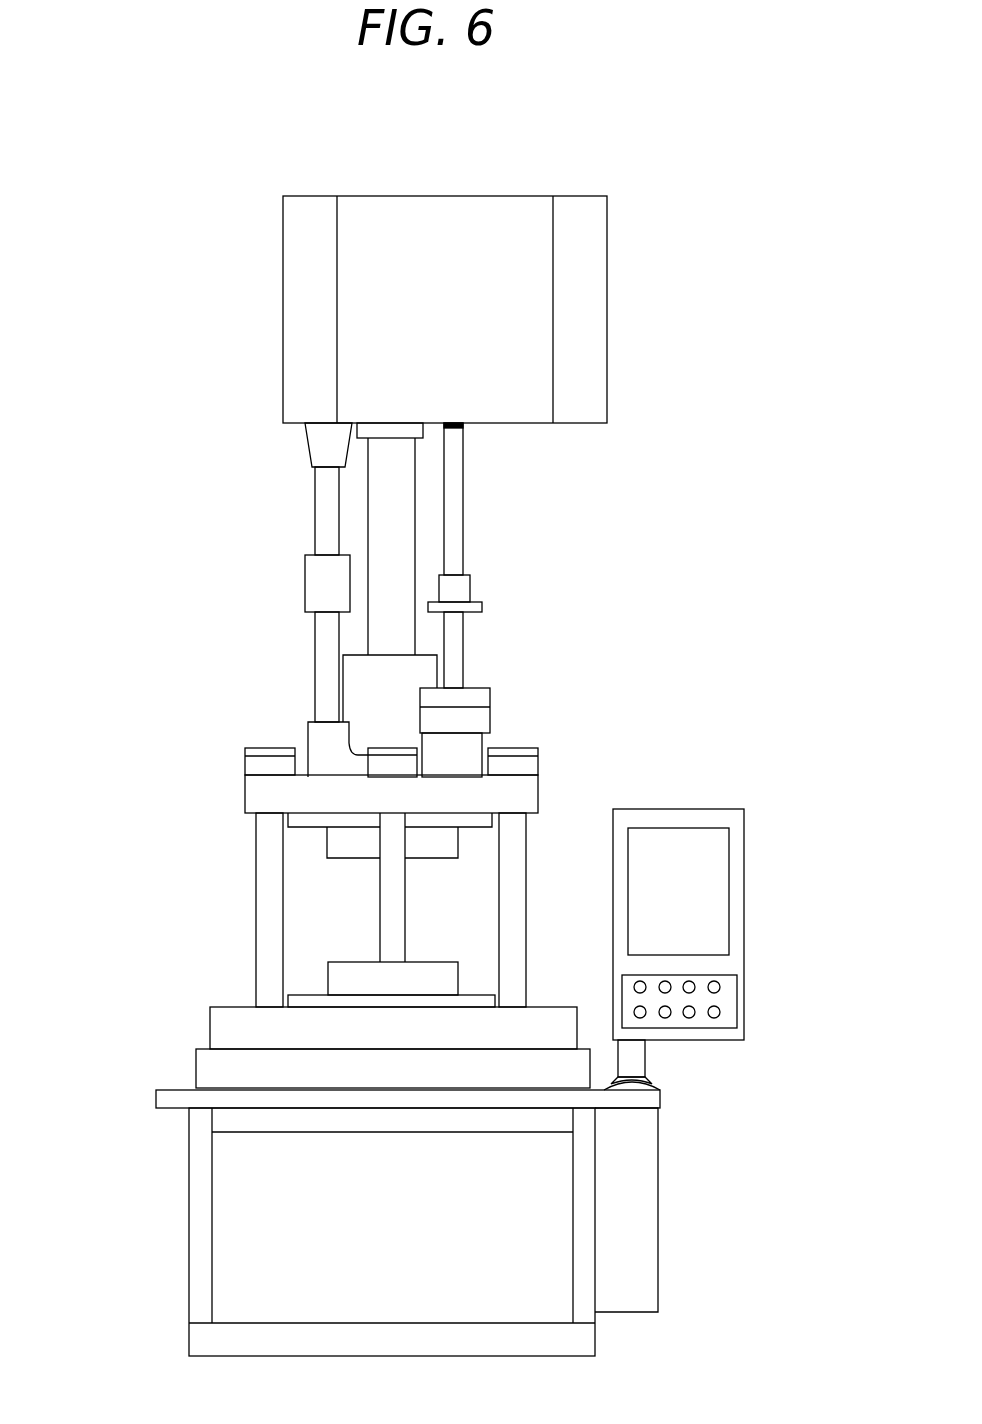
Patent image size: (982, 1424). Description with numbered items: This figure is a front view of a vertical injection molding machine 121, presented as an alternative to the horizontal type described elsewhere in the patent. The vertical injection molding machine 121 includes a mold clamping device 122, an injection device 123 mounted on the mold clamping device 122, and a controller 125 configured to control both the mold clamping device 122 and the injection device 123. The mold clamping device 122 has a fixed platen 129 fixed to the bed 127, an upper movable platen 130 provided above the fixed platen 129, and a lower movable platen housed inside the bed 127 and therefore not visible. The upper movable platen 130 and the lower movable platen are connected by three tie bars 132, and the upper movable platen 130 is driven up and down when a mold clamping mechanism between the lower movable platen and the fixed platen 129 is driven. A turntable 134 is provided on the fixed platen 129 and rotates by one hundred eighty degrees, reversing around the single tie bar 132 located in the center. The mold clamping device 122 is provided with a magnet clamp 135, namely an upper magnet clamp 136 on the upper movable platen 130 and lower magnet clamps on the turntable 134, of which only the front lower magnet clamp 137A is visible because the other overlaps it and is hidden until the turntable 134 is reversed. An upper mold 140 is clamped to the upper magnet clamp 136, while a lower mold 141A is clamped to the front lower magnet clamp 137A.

The vertical injection molding machine 121 is at (742, 189).
The mold clamping device 122 is at (559, 727).
The injection device 123 is at (211, 400).
The controller 125 is at (715, 809).
The bed 127 is at (168, 1108).
The fixed platen 129 is at (197, 1070).
The upper movable platen 130 is at (245, 787).
The tie bars 132 is at (256, 897).
The turntable 134 is at (210, 1022).
The magnet clamp 135 is at (280, 795).
The upper magnet clamp 136 is at (302, 828).
The lower magnet clamp 137A is at (308, 995).
The upper mold 140 is at (460, 843).
The lower mold 141A is at (427, 962).